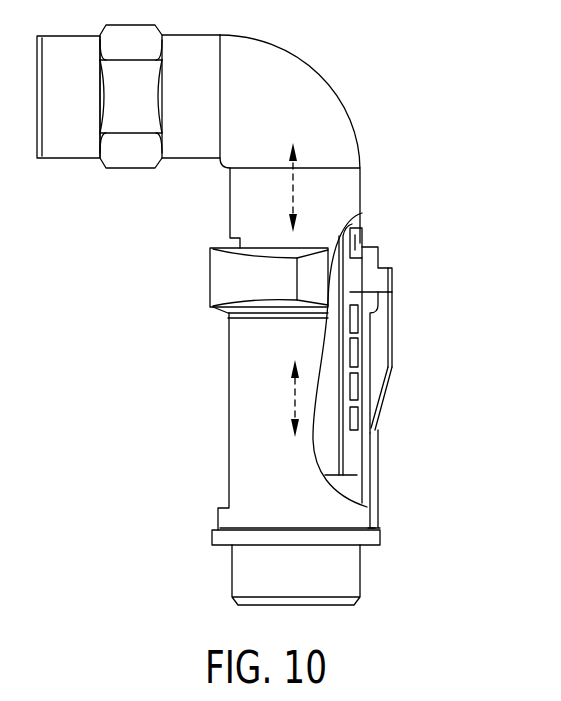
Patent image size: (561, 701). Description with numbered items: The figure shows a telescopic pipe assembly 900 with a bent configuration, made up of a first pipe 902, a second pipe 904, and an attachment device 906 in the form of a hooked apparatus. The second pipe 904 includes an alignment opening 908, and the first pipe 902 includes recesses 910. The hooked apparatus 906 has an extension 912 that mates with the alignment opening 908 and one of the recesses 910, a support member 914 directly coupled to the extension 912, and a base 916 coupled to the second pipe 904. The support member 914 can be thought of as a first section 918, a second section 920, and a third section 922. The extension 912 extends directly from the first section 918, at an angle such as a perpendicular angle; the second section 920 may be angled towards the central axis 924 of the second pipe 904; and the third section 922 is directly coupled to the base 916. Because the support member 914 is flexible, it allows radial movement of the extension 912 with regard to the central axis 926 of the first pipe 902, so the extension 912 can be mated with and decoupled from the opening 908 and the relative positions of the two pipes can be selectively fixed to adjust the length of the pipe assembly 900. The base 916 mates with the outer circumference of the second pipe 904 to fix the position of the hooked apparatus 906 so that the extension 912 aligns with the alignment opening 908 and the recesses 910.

The telescopic pipe assembly 900 is at (397, 80).
The first pipe 902 is at (404, 154).
The second pipe 904 is at (175, 403).
The attachment device 906 is at (421, 270).
The alignment opening 908 is at (390, 245).
The recesses 910 is at (358, 348).
The extension 912 is at (363, 277).
The support member 914 is at (417, 403).
The base 916 is at (187, 530).
The first section 918 is at (395, 307).
The second section 920 is at (388, 402).
The third section 922 is at (380, 483).
The central axis 924 is at (293, 412).
The central axis 926 is at (297, 203).